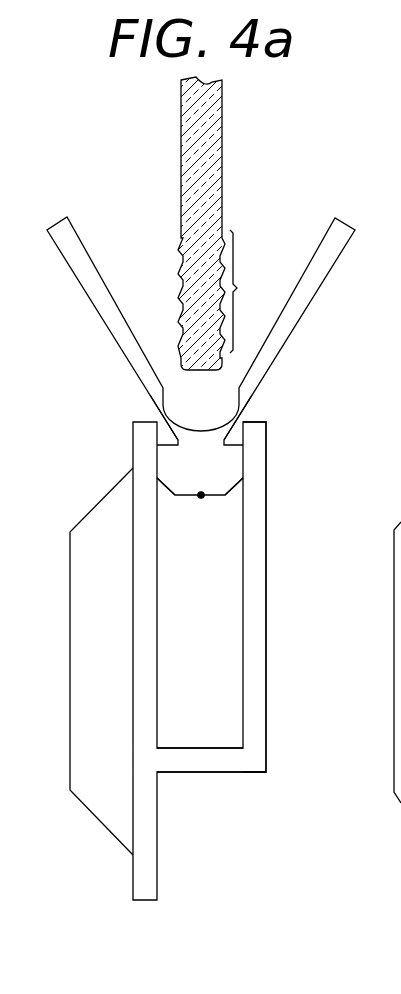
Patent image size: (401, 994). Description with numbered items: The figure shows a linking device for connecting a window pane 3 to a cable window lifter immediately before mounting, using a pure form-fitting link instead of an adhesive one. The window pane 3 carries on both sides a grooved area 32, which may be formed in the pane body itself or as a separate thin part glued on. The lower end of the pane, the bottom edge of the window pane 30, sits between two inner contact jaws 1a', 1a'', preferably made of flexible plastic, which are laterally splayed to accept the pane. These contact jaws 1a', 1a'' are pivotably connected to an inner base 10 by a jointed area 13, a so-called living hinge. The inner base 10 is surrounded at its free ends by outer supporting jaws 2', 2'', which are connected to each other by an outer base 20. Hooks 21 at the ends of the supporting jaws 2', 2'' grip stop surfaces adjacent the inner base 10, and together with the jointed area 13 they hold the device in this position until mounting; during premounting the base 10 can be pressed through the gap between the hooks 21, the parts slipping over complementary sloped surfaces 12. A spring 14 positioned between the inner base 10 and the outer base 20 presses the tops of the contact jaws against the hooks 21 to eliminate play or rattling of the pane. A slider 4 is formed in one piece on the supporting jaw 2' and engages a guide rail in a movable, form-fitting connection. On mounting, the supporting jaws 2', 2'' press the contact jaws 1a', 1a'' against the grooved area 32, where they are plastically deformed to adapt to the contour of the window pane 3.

The window pane 3 is at (190, 170).
The grooved area 32 is at (238, 288).
The contact jaw 1a' is at (92, 328).
The contact jaw 1a'' is at (305, 329).
The bottom edge of the window pane 30 is at (180, 374).
The jointed area 13 is at (136, 408).
The hooks 21 is at (153, 437).
The supporting jaw 2' is at (206, 661).
The supporting jaw 2'' is at (290, 597).
The base 10 is at (215, 470).
The sloped surfaces 12 is at (152, 496).
The spring 14 is at (212, 506).
The base 20 is at (205, 762).
The slider 4 is at (88, 628).